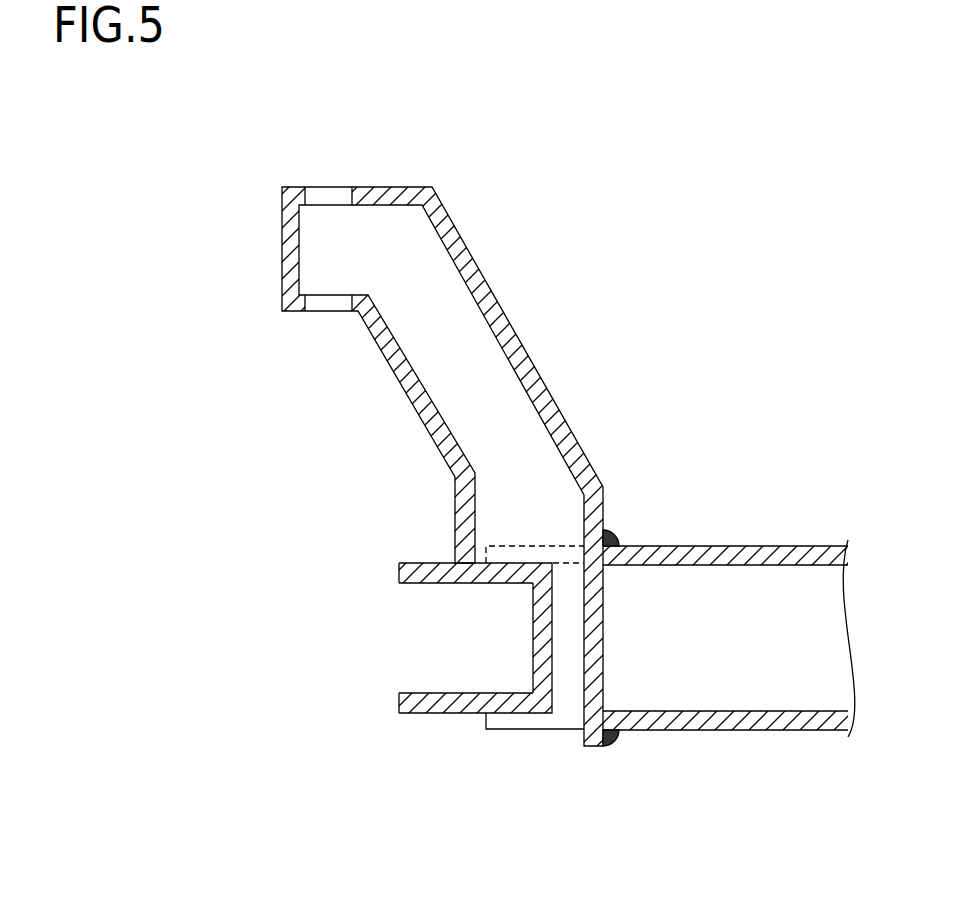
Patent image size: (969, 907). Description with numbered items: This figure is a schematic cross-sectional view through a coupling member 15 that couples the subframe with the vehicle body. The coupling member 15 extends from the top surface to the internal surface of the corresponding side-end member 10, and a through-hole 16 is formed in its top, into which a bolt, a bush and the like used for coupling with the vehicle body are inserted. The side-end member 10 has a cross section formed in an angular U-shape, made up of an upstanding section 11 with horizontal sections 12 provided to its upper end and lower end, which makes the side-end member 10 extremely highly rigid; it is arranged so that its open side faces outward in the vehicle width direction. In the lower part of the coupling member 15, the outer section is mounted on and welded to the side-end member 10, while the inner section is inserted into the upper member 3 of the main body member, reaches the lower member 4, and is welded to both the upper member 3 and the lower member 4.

The upper member 3 is at (761, 546).
The lower member 4 is at (765, 730).
The side-end member 10 is at (414, 640).
The upstanding section 11 is at (533, 614).
The horizontal sections 12 is at (412, 563).
The coupling member 15 is at (561, 287).
The through-hole 16 is at (323, 190).